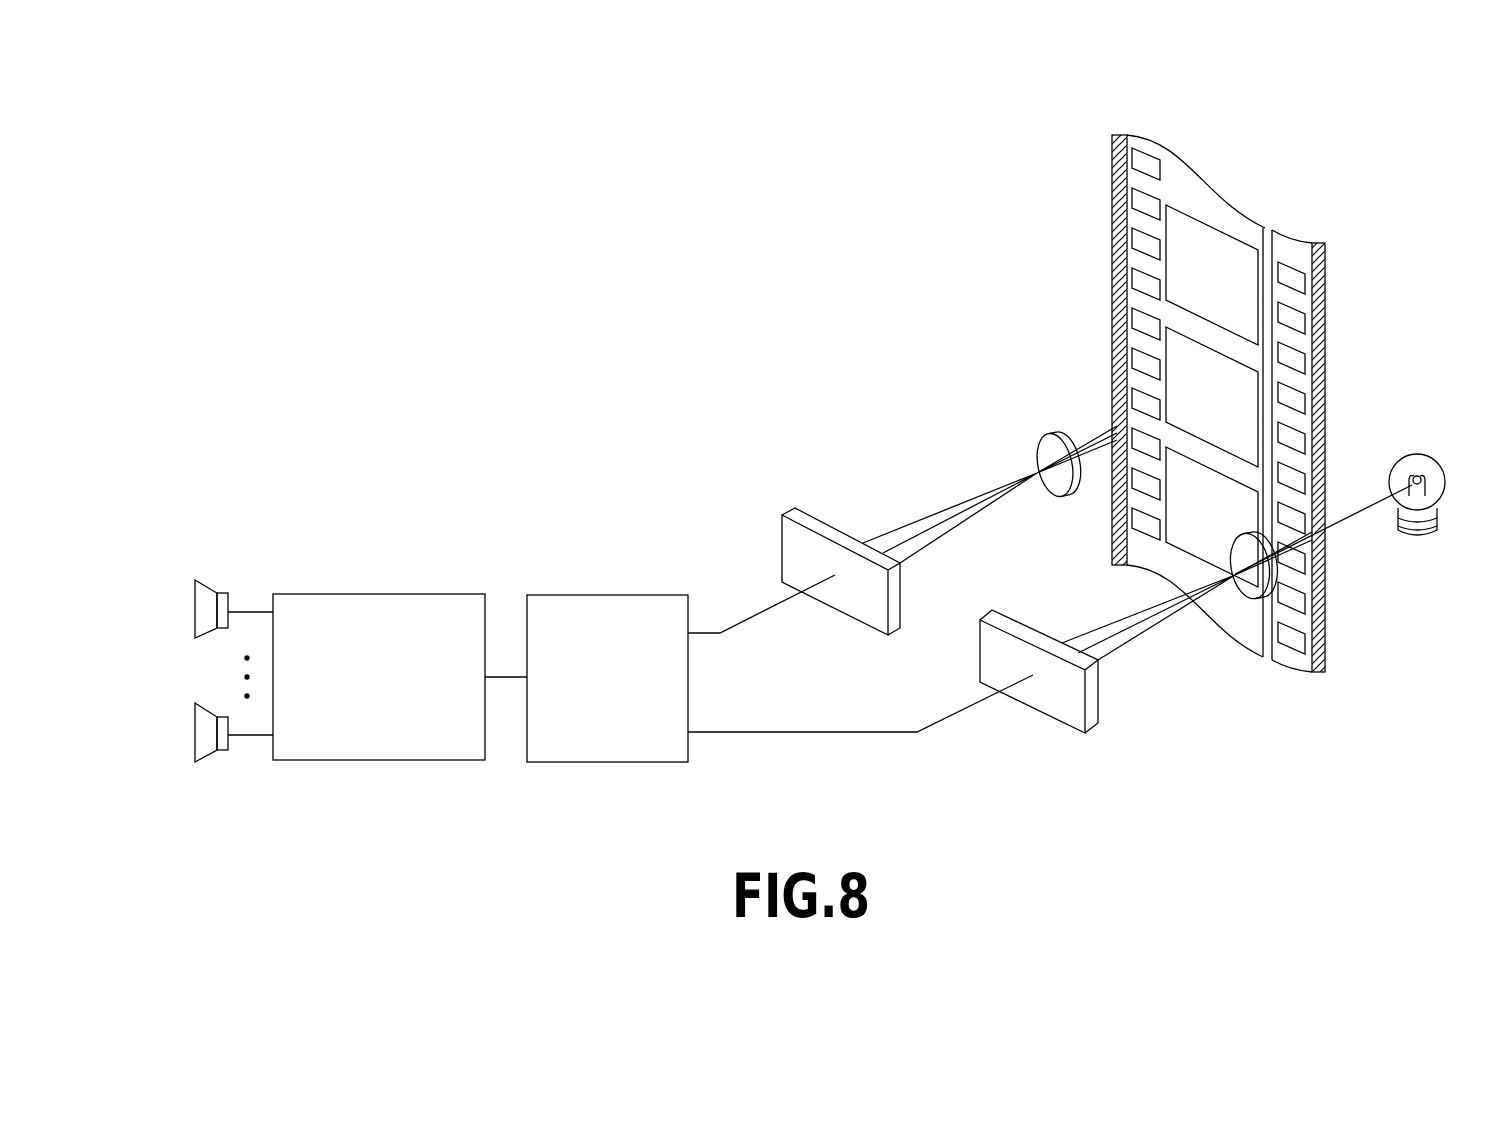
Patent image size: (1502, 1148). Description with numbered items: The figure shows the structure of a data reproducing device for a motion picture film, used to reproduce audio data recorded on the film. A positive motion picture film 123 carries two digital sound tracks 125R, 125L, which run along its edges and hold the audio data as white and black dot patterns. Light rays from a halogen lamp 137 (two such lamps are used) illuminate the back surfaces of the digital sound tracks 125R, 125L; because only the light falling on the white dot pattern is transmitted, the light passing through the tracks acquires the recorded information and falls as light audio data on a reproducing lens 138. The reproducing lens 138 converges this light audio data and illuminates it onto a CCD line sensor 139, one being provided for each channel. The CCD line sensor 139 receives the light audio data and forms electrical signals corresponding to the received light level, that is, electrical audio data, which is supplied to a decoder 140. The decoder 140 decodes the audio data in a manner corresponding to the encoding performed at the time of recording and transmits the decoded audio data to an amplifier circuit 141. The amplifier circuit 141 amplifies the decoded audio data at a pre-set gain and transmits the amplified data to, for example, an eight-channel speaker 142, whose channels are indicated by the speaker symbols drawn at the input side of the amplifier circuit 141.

The motion picture film 123 is at (1225, 403).
The digital sound track 125L is at (1117, 245).
The digital sound track 125R is at (1325, 303).
The halogen lamp 137 is at (1432, 470).
The reproducing lens 138 is at (1042, 458).
The CCD line sensor 139 is at (793, 545).
The decoder 140 is at (603, 594).
The amplifier circuit 141 is at (377, 594).
The 8-channel speaker 142 is at (212, 587).